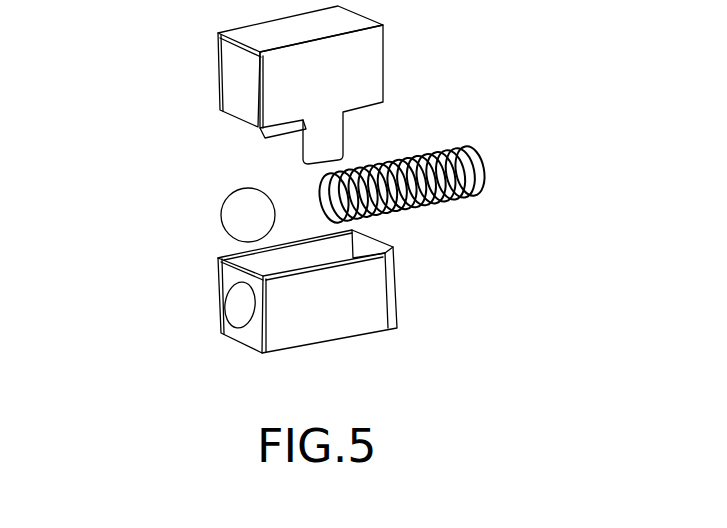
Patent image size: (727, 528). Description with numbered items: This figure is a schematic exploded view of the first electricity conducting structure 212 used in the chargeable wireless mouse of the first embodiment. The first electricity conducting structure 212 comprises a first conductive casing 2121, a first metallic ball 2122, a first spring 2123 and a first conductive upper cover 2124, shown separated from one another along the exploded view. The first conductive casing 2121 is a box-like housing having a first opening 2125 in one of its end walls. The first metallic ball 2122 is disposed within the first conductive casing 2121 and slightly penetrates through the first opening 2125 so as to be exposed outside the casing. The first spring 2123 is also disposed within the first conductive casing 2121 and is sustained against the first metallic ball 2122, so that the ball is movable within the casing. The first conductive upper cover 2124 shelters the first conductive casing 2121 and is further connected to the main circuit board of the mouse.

The first electricity conducting structure 212 is at (166, 70).
The first conductive casing 2121 is at (335, 315).
The first metallic ball 2122 is at (240, 215).
The first spring 2123 is at (470, 147).
The first conductive upper cover 2124 is at (368, 78).
The first opening 2125 is at (230, 298).